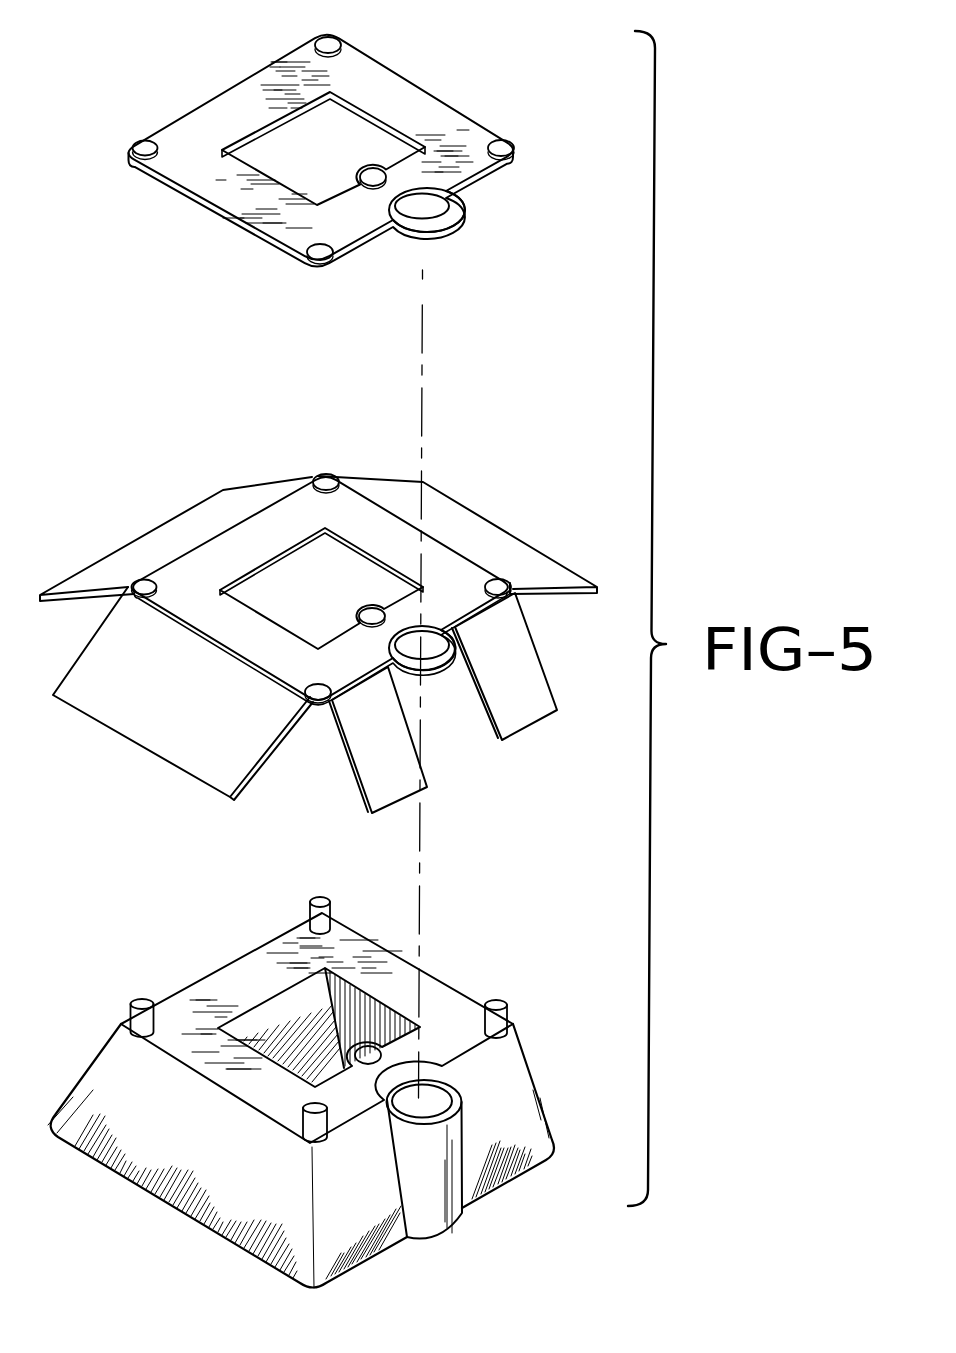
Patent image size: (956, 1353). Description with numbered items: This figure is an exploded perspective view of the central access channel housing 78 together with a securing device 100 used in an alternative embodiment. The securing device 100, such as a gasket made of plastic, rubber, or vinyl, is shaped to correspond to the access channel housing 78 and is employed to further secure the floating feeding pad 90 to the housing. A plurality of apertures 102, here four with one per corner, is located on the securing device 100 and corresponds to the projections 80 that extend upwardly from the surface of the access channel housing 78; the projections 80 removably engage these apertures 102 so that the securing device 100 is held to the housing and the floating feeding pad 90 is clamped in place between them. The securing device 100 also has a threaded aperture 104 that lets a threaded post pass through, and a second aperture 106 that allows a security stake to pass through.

The access channel housing 78 is at (195, 1210).
The projections 80 is at (138, 1002).
The floating feeding pad 90 is at (148, 529).
The securing device 100 is at (176, 110).
The apertures 102 is at (503, 146).
The threaded aperture 104 is at (372, 173).
The second aperture 106 is at (433, 214).